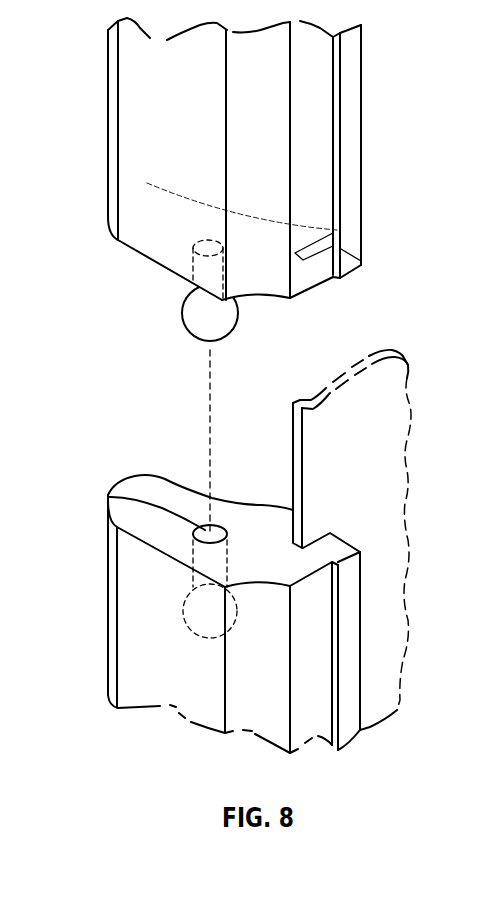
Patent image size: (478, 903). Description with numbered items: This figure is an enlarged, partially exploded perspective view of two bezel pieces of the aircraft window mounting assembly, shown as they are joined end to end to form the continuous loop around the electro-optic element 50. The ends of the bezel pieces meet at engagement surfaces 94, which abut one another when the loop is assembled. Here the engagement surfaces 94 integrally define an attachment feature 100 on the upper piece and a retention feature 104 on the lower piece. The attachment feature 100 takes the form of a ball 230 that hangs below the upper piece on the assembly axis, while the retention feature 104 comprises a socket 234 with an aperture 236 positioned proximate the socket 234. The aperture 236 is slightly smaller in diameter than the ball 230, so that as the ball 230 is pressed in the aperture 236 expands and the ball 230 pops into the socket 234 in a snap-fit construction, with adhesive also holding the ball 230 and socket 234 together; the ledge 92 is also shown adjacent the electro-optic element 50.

The engagement surfaces 94 is at (311, 287).
The ball 230 is at (180, 327).
The attachment feature 100 is at (192, 310).
The aperture 236 is at (108, 497).
The socket 234 is at (136, 581).
The retention feature 104 is at (187, 592).
The ledge 92 is at (313, 558).
The electro-optic element 50 is at (386, 428).